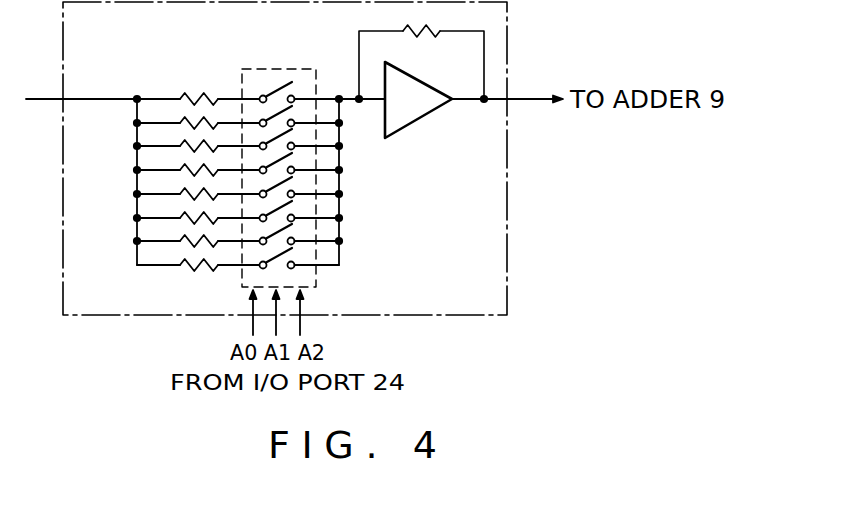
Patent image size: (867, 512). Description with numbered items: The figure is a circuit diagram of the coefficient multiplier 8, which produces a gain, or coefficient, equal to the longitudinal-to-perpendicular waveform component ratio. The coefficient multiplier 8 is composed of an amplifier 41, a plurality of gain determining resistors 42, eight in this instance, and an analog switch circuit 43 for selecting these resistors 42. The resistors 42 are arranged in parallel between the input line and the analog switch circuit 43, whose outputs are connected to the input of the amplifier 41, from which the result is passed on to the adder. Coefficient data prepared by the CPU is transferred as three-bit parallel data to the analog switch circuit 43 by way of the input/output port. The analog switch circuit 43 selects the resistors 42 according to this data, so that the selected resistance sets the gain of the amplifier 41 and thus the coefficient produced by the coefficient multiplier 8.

The coefficient multiplier 8 is at (507, 258).
The amplifier 41 is at (418, 122).
The gain determining resistors 42 is at (199, 93).
The analog switch circuit 43 is at (281, 68).